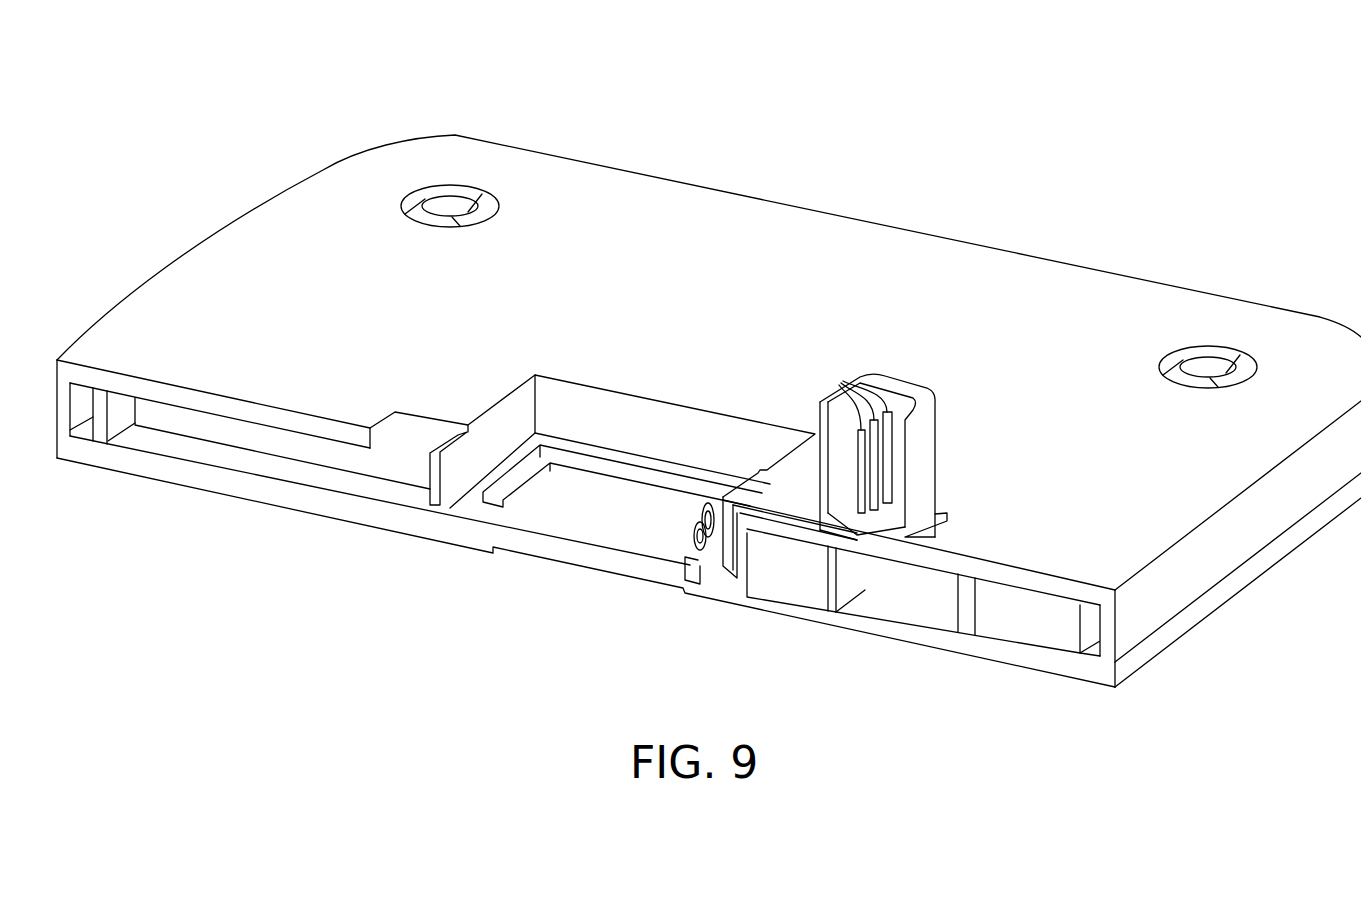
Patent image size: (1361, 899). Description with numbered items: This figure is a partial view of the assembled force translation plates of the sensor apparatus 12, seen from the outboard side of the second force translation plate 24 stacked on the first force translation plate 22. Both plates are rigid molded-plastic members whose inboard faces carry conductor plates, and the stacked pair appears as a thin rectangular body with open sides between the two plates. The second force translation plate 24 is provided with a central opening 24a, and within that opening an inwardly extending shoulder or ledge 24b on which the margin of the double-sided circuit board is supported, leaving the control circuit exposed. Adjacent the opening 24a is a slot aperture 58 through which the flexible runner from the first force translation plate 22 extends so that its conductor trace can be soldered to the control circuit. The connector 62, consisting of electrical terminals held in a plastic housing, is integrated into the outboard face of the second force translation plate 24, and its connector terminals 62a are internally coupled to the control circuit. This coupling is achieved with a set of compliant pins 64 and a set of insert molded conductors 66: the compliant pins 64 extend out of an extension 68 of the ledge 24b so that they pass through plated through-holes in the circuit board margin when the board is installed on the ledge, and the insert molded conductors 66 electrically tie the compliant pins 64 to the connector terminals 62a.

The sensor apparatus 12 is at (542, 127).
The first force translation plate 22 is at (1026, 656).
The second force translation plate 24 is at (1245, 543).
The central opening 24a is at (455, 473).
The ledge 24b is at (448, 504).
The slot aperture 58 is at (413, 450).
The connector 62 is at (927, 450).
The connector terminals 62a is at (841, 387).
The compliant pins 64 is at (700, 518).
The insert molded conductors 66 is at (739, 556).
The extension of ledge 68 is at (711, 553).